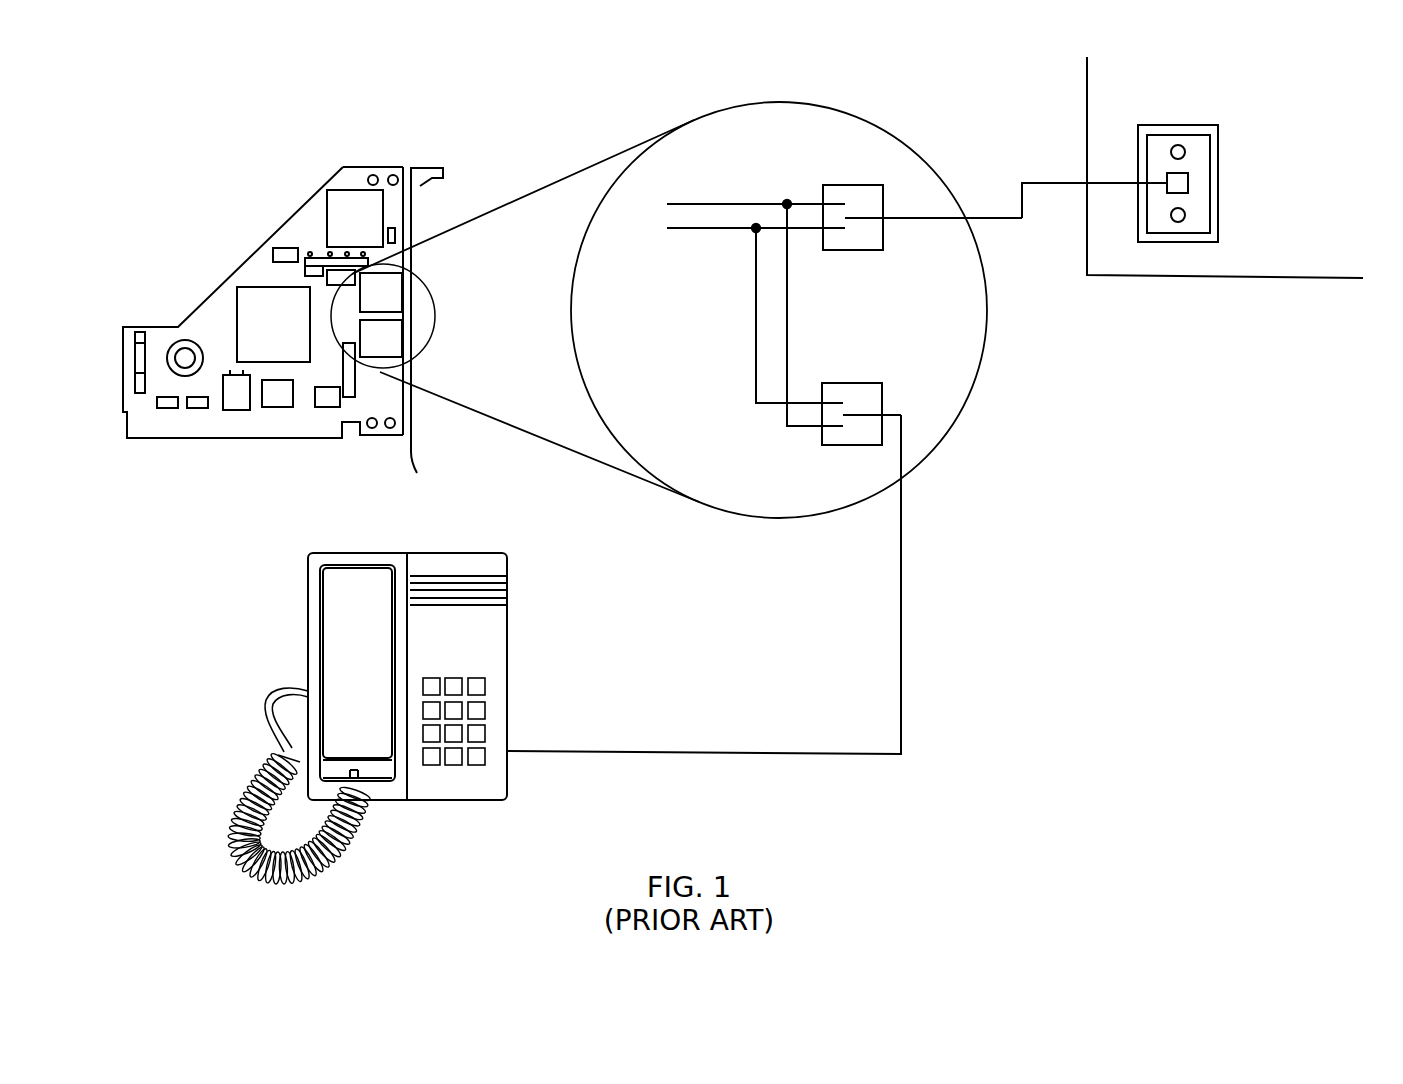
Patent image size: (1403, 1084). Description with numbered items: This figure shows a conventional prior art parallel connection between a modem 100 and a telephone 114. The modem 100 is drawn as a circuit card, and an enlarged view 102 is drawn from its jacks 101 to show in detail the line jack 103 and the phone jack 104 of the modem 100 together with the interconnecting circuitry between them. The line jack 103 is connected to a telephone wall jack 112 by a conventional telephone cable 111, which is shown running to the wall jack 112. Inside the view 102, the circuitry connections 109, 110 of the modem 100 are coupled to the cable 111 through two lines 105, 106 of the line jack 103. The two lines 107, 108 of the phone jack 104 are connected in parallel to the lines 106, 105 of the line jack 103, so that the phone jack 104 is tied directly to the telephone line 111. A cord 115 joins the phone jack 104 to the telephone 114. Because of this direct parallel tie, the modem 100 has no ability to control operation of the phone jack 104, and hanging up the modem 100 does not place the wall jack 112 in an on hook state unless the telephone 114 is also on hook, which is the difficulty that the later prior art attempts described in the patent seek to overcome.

The modem 100 is at (358, 167).
The telephone jacks 101 is at (432, 287).
The view 102 is at (575, 318).
The line jack 103 is at (860, 251).
The phone jack 104 is at (845, 446).
The line 105 is at (798, 202).
The line 106 is at (803, 231).
The line 107 is at (800, 400).
The line 108 is at (798, 428).
The circuitry connection 109 is at (697, 202).
The circuitry connection 110 is at (695, 230).
The RJ-11 cable 111 is at (992, 217).
The telephone wall jack 112 is at (1178, 125).
The telephone 114 is at (470, 553).
The telephone cord 115 is at (638, 750).